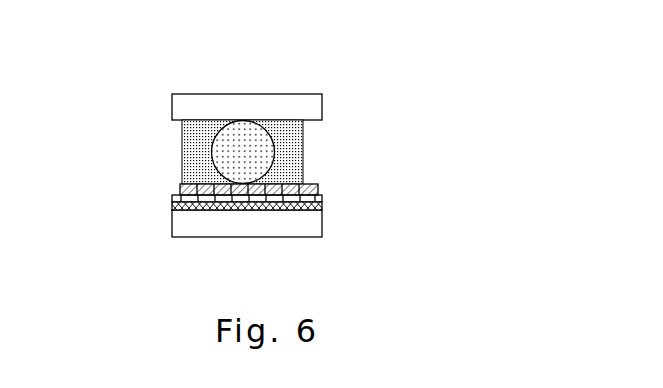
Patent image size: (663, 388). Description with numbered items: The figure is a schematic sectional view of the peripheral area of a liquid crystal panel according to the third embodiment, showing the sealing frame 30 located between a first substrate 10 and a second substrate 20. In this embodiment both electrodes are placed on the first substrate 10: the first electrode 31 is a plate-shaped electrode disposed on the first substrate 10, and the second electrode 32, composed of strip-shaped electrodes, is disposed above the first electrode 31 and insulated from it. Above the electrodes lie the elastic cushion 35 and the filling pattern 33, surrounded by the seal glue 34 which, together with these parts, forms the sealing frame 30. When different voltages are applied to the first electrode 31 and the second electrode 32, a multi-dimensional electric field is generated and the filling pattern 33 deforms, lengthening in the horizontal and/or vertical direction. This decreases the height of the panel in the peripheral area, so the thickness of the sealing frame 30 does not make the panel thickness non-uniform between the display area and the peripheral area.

The first substrate 10 is at (297, 212).
The second substrate 20 is at (285, 108).
The sealing frame 30 is at (257, 193).
The first electrode 31 is at (220, 207).
The second electrode 32 is at (231, 186).
The filling pattern 33 is at (260, 157).
The seal glue 34 is at (200, 152).
The elastic cushion 35 is at (183, 205).